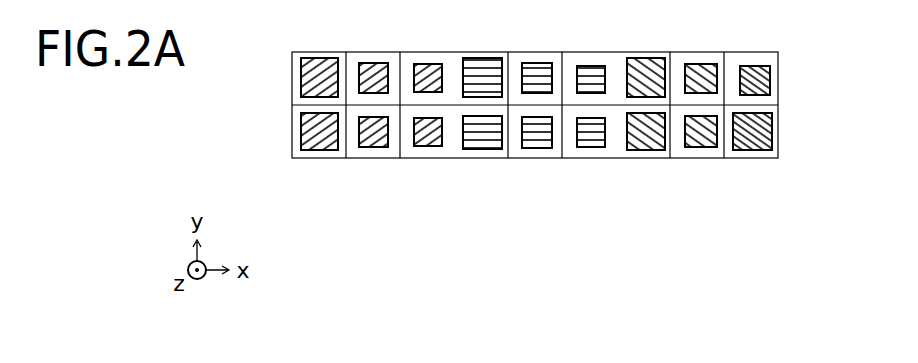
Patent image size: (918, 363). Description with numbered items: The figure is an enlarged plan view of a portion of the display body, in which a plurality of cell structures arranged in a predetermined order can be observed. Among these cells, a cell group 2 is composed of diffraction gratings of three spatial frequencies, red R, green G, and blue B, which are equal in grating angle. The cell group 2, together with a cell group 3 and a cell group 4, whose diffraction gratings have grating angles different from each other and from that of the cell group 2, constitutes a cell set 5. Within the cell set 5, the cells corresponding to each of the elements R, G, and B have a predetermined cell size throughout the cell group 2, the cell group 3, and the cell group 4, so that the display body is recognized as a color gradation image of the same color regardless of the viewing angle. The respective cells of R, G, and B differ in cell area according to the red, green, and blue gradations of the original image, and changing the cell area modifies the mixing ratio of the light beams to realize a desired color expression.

The cell group 2 is at (295, 193).
The cell group 3 is at (462, 193).
The cell group 4 is at (622, 193).
The cell set 5 is at (298, 250).
The red element R is at (330, 130).
The green element G is at (377, 140).
The blue element B is at (433, 140).